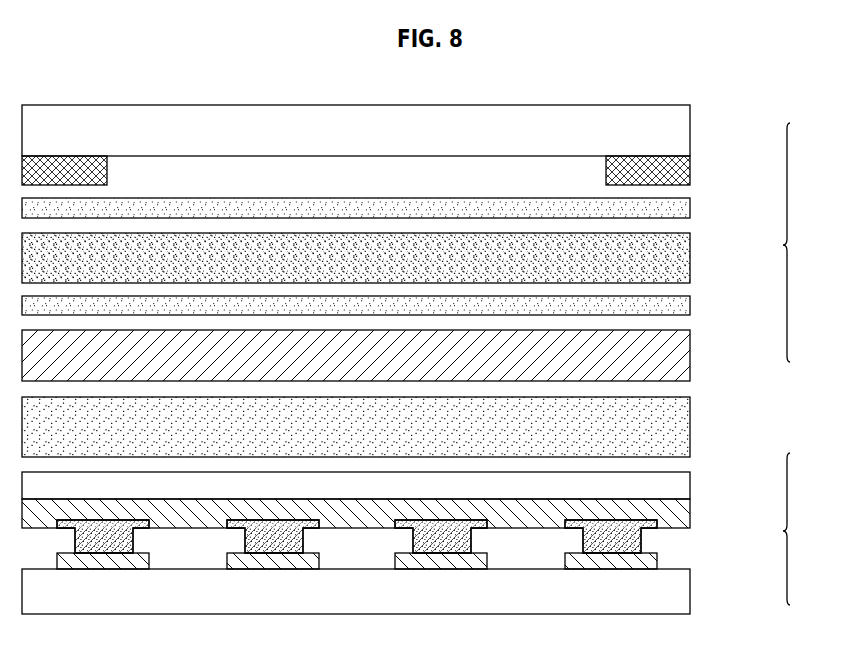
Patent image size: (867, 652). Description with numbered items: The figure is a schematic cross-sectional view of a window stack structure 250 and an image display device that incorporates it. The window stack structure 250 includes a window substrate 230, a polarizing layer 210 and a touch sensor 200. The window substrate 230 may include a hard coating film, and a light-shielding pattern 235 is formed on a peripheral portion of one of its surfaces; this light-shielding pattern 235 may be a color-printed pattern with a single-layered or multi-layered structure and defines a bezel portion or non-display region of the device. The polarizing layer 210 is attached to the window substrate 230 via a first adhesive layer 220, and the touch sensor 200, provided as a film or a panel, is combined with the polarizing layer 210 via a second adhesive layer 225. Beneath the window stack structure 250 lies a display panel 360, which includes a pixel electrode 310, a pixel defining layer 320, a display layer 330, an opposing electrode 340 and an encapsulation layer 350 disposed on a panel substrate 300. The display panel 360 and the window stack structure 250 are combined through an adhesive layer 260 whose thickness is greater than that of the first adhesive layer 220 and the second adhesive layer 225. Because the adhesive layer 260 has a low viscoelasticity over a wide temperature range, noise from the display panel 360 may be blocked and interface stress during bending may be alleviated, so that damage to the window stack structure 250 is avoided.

The window substrate 230 is at (685, 135).
The light-shielding pattern 235 is at (690, 172).
The first adhesive layer 220 is at (688, 207).
The polarizing layer 210 is at (688, 257).
The second adhesive layer 225 is at (688, 303).
The touch sensor 200 is at (686, 352).
The window stack structure 250 is at (813, 242).
The adhesive layer 260 is at (686, 425).
The encapsulation layer 350 is at (685, 487).
The opposing electrode 340 is at (687, 512).
The display layer 330 is at (620, 522).
The pixel defining layer 320 is at (685, 540).
The pixel electrode 310 is at (657, 557).
The panel substrate 300 is at (685, 593).
The display panel 360 is at (813, 529).